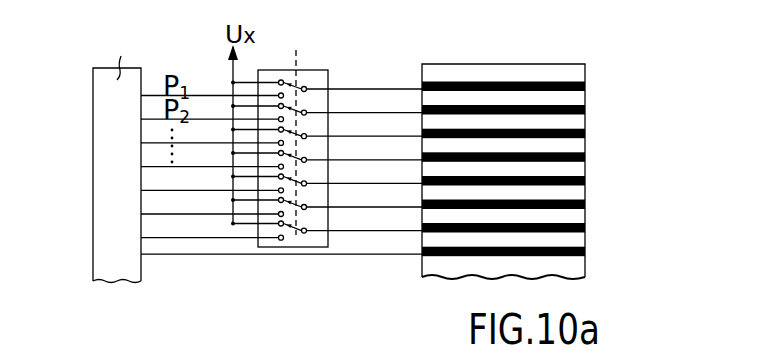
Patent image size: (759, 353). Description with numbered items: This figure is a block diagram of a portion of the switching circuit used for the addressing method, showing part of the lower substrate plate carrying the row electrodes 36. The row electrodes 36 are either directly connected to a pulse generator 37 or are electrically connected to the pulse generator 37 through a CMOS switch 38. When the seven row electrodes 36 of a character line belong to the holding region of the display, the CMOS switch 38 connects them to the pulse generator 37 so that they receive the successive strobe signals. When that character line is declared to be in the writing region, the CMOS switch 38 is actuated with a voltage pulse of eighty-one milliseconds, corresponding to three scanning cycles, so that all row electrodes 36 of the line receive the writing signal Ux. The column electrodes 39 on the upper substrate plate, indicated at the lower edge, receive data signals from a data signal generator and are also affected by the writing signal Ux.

The row electrodes 36 is at (588, 232).
The pulse generator 37 is at (106, 158).
The CMOS switch 38 is at (306, 78).
The column electrodes 39 is at (288, 352).